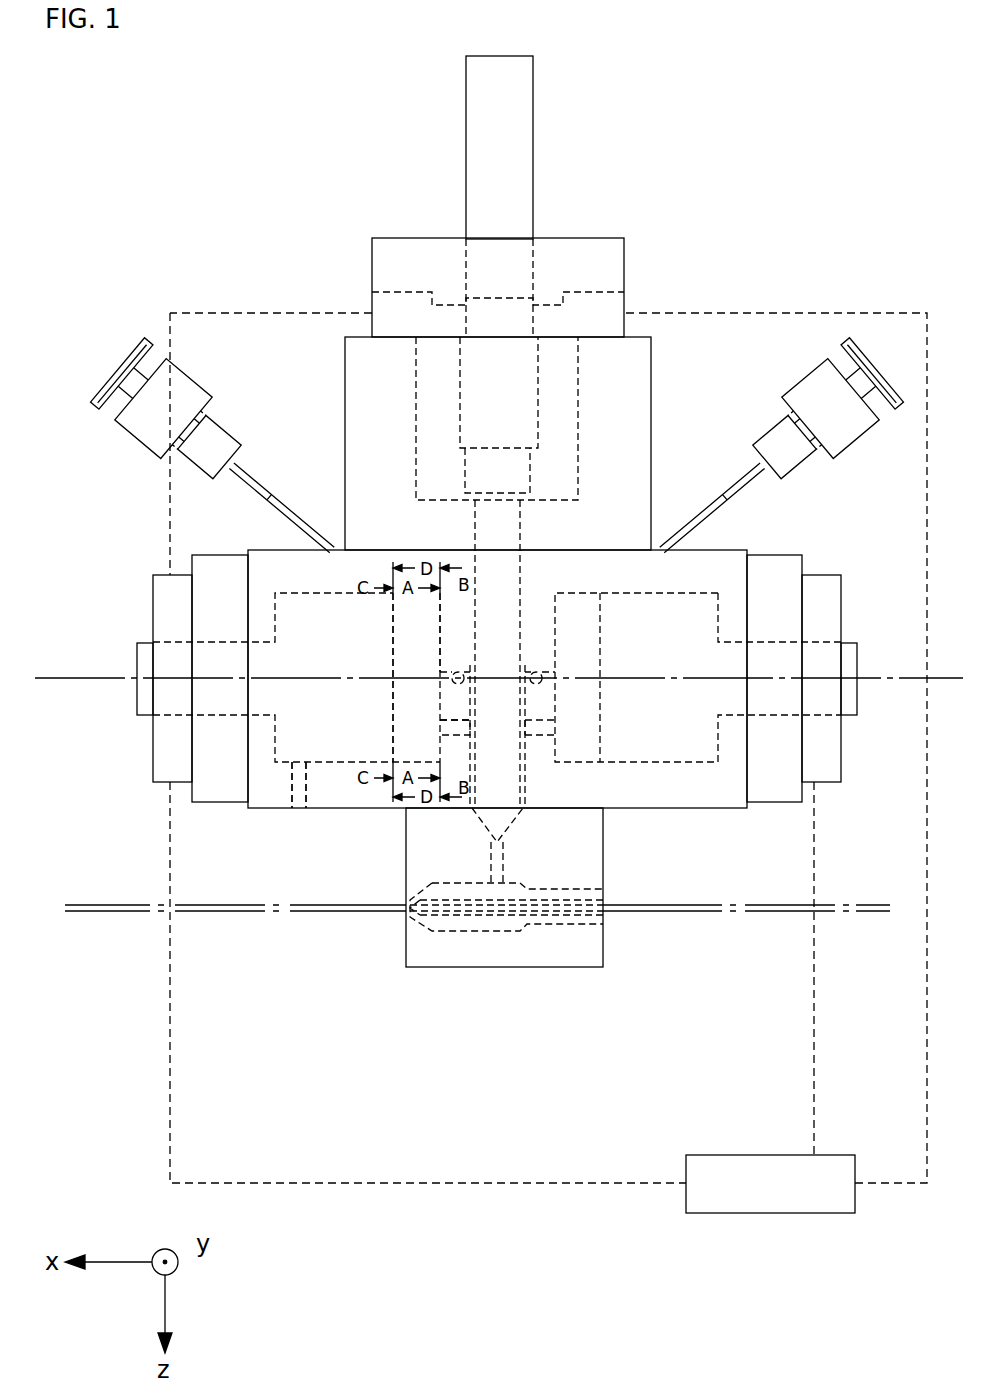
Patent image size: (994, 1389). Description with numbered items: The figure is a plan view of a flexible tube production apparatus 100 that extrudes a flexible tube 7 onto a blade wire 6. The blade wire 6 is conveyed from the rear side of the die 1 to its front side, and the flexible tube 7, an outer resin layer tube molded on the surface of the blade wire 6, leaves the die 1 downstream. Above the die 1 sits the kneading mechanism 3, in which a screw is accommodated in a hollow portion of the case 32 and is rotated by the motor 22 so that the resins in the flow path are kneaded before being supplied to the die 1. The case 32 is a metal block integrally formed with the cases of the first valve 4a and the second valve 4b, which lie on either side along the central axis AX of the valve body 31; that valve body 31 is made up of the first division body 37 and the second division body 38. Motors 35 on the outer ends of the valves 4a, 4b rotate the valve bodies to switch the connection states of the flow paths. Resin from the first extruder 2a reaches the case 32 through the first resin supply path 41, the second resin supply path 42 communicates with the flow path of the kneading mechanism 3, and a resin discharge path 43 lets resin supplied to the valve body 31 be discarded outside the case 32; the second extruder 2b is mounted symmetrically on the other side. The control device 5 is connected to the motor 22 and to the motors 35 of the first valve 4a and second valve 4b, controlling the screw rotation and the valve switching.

The flexible tube production apparatus 100 is at (148, 152).
The motor 22 is at (628, 312).
The first extruder 2a is at (187, 370).
The second extruder 2b is at (795, 372).
The first resin supply path 41 is at (460, 670).
The second resin supply path 42 is at (463, 707).
The first valve 4a is at (246, 550).
The second valve 4b is at (752, 550).
The motors 35 is at (153, 597).
The central axis AX is at (46, 678).
The valve body 31 is at (356, 866).
The second division body 38 is at (330, 748).
The first division body 37 is at (405, 703).
The case 32 is at (383, 808).
The resin discharge path 43 is at (292, 800).
The kneading mechanism 3 is at (503, 782).
The die 1 is at (572, 968).
The flexible tube 7 is at (100, 905).
The blade wire 6 is at (874, 905).
The control device 5 is at (830, 1155).